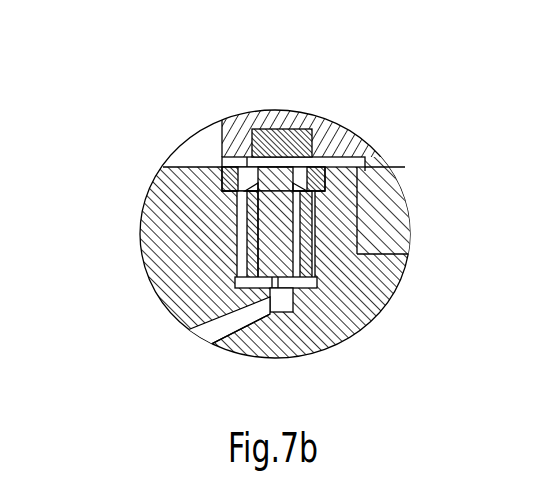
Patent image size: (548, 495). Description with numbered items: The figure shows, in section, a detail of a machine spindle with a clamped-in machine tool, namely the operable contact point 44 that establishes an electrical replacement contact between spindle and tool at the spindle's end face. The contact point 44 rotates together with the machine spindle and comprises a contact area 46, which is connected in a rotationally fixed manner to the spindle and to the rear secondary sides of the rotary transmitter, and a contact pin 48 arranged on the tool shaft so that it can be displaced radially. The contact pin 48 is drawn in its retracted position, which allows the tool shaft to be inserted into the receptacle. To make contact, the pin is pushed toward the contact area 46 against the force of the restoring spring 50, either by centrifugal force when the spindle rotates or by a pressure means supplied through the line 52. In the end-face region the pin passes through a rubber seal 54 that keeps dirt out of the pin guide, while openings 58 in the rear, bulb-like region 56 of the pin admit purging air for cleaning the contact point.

The contact point 44 is at (334, 148).
The contact area 46 is at (273, 132).
The contact pin 48 is at (335, 266).
The restoring spring 50 is at (237, 200).
The line 52 is at (232, 325).
The rubber seal 54 is at (223, 141).
The bulb-like region 56 is at (293, 312).
The openings 58 is at (260, 290).